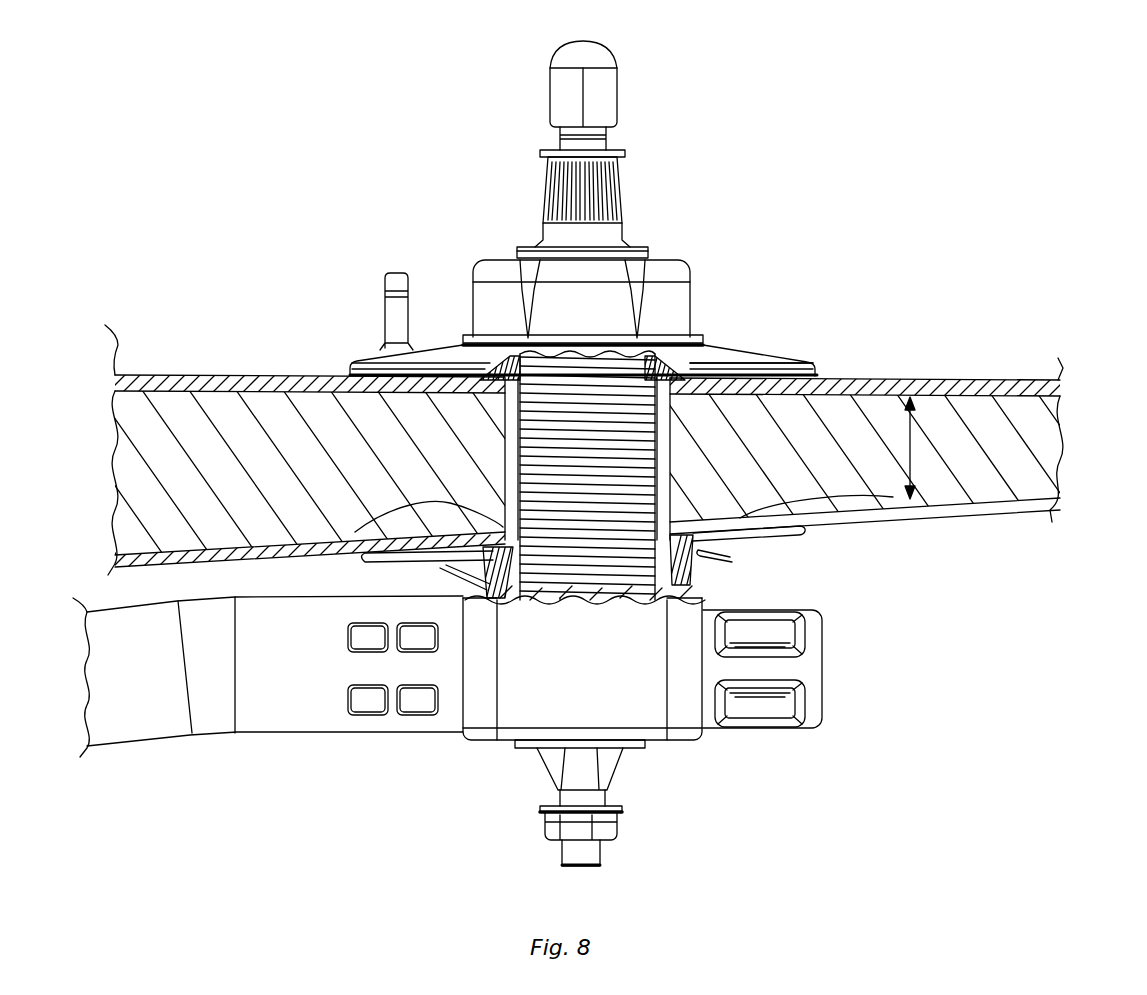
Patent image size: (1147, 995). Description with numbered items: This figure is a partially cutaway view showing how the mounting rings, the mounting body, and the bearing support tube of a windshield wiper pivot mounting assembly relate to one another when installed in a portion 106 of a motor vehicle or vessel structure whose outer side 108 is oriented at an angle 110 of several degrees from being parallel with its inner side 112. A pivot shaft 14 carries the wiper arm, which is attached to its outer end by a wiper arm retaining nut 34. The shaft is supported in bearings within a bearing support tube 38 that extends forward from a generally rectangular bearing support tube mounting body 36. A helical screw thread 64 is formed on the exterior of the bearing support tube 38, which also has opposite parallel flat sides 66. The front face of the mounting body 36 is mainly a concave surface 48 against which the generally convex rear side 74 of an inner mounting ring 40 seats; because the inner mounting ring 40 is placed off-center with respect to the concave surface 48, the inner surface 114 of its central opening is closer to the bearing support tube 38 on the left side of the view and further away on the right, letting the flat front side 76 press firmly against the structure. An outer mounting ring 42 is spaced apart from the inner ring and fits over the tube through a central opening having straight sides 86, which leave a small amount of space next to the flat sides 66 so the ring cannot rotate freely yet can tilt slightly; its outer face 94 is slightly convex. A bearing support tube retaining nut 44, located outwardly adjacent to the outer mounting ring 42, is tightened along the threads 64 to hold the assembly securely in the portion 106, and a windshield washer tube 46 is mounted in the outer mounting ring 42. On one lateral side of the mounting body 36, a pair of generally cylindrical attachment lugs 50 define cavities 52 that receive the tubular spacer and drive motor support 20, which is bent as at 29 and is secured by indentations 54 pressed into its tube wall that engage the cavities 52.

The pivot shaft 14 is at (600, 148).
The spacer and drive motor support 20 is at (140, 747).
The bend 29 is at (212, 733).
The wiper arm retaining nut 34 is at (610, 93).
The bearing support tube mounting body 36 is at (648, 707).
The bearing support tube 38 is at (655, 480).
The inner mounting ring 40 is at (803, 530).
The outer mounting ring 42 is at (817, 372).
The bearing support tube retaining nut 44 is at (690, 262).
The windshield washer tube 46 is at (392, 317).
The concave surface 48 is at (580, 598).
The attachment lugs 50 is at (822, 673).
The cavities 52 is at (773, 627).
The indentations 54 is at (375, 703).
The helical screw thread 64 is at (582, 373).
The flat sides 66 is at (508, 450).
The rear side 74 is at (403, 592).
The front side 76 is at (887, 498).
The straight sides 86 is at (527, 358).
The outer face 94 is at (727, 345).
The portion of a structure 106 is at (992, 380).
The outer side 108 is at (910, 378).
The angle 110 is at (915, 440).
The inner side 112 is at (955, 513).
The inner surface 114 is at (512, 546).